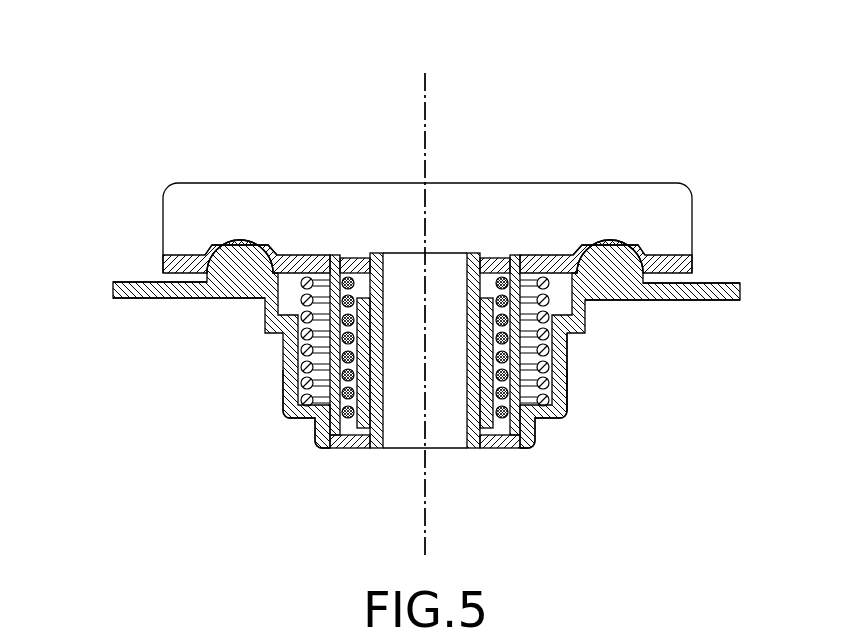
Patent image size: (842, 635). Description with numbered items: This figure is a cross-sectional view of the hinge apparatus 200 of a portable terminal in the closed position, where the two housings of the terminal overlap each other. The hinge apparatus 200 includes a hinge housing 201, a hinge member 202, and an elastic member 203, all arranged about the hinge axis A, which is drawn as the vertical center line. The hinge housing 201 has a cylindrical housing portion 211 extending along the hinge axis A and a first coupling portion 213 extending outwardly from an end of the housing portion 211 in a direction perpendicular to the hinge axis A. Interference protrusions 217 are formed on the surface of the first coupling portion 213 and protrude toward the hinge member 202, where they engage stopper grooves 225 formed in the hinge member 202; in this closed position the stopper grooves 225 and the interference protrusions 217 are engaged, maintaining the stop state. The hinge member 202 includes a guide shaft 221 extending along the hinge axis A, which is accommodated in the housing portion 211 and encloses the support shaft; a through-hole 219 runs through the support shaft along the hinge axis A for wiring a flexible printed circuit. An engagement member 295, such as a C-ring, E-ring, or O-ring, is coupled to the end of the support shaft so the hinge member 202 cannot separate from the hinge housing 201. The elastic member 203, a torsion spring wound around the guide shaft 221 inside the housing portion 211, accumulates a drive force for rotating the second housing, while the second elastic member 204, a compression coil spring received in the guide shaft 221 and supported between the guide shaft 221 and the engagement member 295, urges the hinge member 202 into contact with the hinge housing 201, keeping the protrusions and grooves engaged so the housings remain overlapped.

The hinge apparatus 200 is at (438, 43).
The hinge housing 201 is at (584, 393).
The hinge member 202 is at (684, 172).
The elastic member 203 is at (283, 354).
The second elastic member 204 is at (365, 283).
The housing portion 211 is at (285, 403).
The first coupling portion 213 is at (113, 284).
The interference protrusions 217 is at (221, 256).
The through-hole 219 is at (448, 432).
The guide shaft 221 is at (343, 432).
The stopper grooves 225 is at (220, 245).
The engagement member 295 is at (495, 263).
The hinge axis A is at (427, 100).